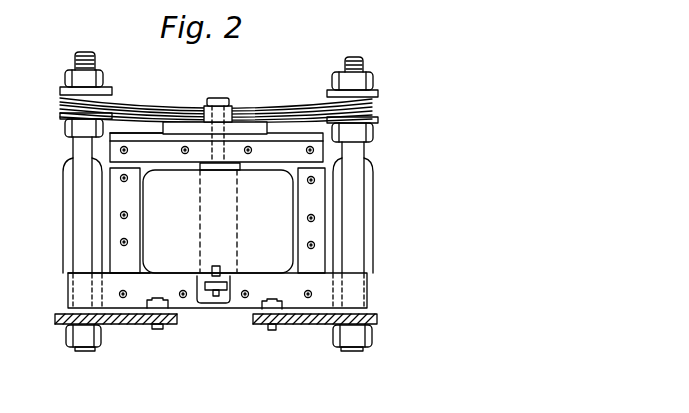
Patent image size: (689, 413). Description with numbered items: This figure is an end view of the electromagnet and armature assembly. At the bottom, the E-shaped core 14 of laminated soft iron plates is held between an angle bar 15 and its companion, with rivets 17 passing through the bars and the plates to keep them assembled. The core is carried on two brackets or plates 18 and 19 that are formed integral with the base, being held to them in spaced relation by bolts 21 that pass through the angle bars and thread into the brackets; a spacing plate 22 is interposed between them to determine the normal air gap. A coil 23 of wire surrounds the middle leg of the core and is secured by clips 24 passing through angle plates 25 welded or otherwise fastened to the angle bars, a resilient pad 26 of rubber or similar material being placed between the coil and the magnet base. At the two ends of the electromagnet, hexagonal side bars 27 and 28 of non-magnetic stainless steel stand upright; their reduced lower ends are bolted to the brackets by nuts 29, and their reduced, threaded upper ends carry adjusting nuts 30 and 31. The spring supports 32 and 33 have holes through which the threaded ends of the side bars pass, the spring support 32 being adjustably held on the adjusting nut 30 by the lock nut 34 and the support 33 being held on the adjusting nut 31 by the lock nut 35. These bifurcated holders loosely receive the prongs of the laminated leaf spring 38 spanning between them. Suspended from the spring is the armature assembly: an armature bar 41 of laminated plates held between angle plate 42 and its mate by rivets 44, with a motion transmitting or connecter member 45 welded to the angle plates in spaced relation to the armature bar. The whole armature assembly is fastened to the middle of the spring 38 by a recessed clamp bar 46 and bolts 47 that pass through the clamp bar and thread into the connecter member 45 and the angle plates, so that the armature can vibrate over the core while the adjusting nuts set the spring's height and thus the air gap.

The core 14 is at (115, 235).
The angle bar 15 is at (192, 298).
The rivets 17 is at (245, 297).
The bracket or plate 18 is at (291, 321).
The bracket or plate 19 is at (148, 319).
The bolts 21 is at (272, 329).
The spacing plate 22 is at (313, 324).
The coil 23 is at (282, 207).
The clips 24 is at (224, 303).
The angle plates 25 is at (205, 278).
The resilient pad 26 is at (148, 274).
The hexagonal side bar 27 is at (82, 193).
The hexagonal side bar 28 is at (355, 243).
The nuts 29 is at (68, 331).
The adjusting nut 30 is at (66, 126).
The adjusting nut 31 is at (374, 132).
The spring support 32 is at (62, 107).
The spring support 33 is at (378, 95).
The lock nut 34 is at (66, 78).
The lock nut 35 is at (374, 78).
The spring 38 is at (301, 108).
The armature bar 41 is at (148, 145).
The angle plate 42 is at (245, 138).
The rivets 44 is at (186, 146).
The motion transmitting or connecter member 45 is at (262, 127).
The recessed clamp bar 46 is at (228, 113).
The bolts 47 is at (219, 98).